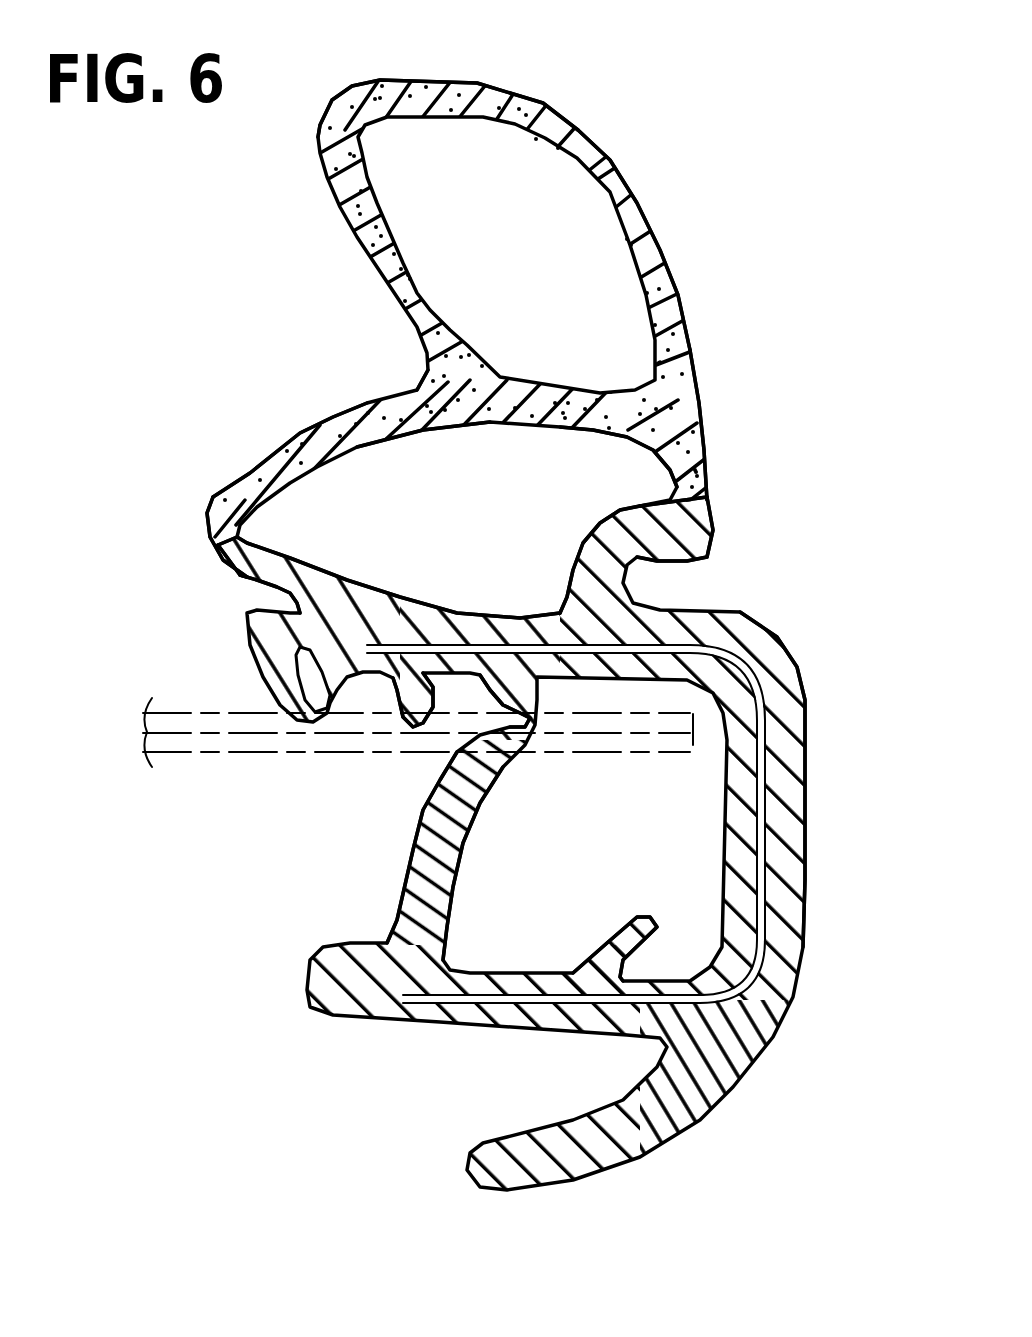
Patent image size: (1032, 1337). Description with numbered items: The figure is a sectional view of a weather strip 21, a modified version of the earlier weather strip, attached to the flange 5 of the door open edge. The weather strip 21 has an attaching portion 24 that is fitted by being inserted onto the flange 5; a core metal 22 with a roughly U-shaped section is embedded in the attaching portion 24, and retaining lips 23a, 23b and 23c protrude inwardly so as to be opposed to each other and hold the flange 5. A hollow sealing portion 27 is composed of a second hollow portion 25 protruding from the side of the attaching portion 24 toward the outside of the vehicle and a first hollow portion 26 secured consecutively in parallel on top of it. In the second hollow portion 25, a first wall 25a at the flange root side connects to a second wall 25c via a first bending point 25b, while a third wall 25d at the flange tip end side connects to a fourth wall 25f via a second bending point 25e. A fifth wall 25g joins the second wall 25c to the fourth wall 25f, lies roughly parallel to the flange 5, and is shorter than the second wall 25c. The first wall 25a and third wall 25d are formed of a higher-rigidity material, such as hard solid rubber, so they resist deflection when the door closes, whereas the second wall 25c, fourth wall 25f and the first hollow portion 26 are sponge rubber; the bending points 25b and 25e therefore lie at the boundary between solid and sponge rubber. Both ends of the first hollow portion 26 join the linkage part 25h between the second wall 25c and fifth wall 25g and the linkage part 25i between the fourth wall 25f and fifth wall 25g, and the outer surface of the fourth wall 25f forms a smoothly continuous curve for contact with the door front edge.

The weather strip 21 is at (310, 311).
The core metal 22 is at (547, 842).
The retaining lip 23a is at (423, 891).
The retaining lip 23b is at (620, 943).
The retaining lip 23c is at (507, 700).
The attaching portion 24 is at (787, 744).
The second hollow portion 25 is at (471, 349).
The first wall 25a is at (280, 557).
The first bending point 25b is at (210, 534).
The second wall 25c is at (282, 453).
The third wall 25d is at (597, 547).
The second bending point 25e is at (693, 503).
The fourth wall 25f is at (687, 453).
The fifth wall 25g is at (594, 384).
The linkage part 25h is at (470, 392).
The linkage part 25i is at (663, 407).
The first hollow portion 26 is at (583, 127).
The hollow sealing portion 27 is at (677, 247).
The flange 5 is at (584, 753).